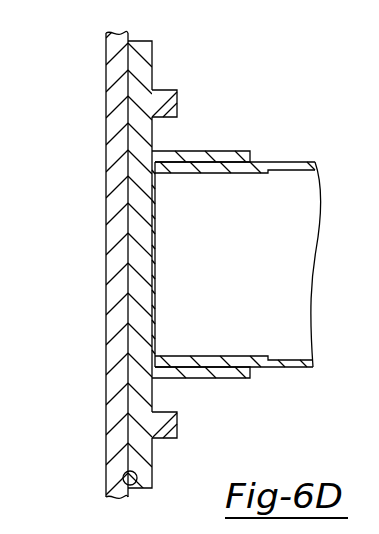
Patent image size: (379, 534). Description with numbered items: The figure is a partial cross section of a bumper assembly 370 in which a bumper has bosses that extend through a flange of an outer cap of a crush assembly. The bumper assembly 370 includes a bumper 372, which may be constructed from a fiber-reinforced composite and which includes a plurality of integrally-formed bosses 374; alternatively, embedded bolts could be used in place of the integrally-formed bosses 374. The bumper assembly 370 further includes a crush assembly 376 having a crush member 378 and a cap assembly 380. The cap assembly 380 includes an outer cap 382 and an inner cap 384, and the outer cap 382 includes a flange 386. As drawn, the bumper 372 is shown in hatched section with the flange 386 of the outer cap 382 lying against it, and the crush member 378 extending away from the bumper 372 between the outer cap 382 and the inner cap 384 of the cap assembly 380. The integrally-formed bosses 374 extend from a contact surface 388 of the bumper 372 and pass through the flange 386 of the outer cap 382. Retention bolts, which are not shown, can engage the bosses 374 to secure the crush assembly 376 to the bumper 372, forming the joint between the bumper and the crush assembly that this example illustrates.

The bumper assembly 370 is at (273, 72).
The bumper 372 is at (110, 170).
The integrally-formed bosses 374 is at (165, 100).
The crush assembly 376 is at (255, 259).
The crush member 378 is at (292, 362).
The cap assembly 380 is at (217, 149).
The outer cap 382 is at (210, 373).
The inner cap 384 is at (196, 355).
The flange 386 is at (148, 53).
The contact surface 388 is at (124, 481).